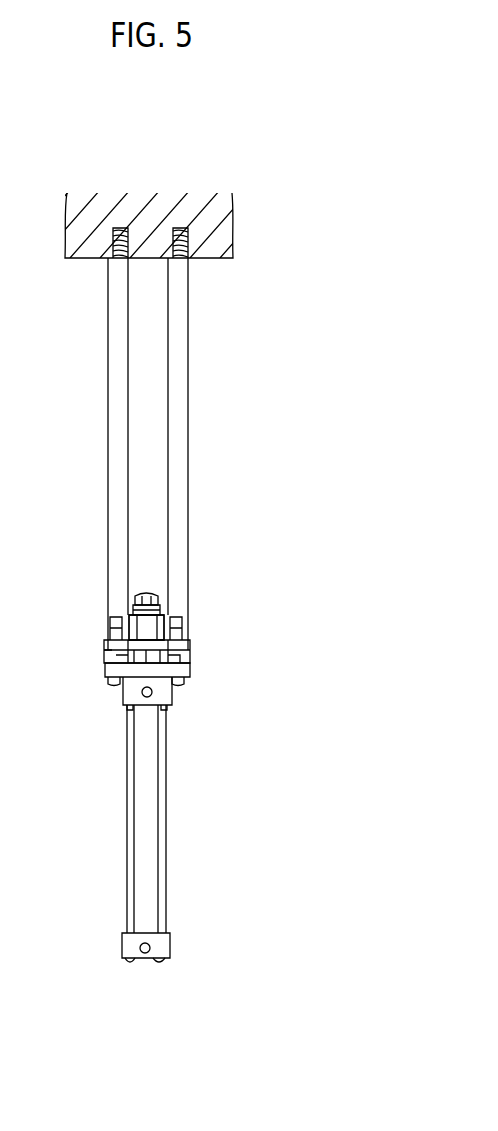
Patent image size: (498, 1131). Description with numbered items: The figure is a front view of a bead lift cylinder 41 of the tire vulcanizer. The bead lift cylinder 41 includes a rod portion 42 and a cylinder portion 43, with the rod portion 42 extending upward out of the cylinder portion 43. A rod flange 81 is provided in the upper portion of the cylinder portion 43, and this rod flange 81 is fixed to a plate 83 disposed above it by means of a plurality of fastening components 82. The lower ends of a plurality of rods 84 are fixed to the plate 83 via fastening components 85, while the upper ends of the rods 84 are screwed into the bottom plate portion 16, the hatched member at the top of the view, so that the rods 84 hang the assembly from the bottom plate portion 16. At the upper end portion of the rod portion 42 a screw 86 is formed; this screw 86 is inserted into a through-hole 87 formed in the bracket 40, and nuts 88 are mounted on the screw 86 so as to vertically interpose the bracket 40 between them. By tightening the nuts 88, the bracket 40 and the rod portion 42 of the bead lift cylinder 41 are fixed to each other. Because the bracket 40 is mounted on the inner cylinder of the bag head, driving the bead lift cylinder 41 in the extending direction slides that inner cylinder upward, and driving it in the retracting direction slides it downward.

The bottom plate portion 16 is at (92, 242).
The rods 84 is at (117, 425).
The rod portion 42 is at (140, 592).
The screw 86 is at (146, 627).
The bracket 40 is at (168, 613).
The nuts 88 is at (135, 612).
The through-hole 87 is at (110, 625).
The fastening components 85 is at (183, 635).
The plate 83 is at (192, 648).
The rod flange 81 is at (190, 670).
The fastening components 82 is at (183, 680).
The bead lift cylinder 41 is at (166, 770).
The cylinder portion 43 is at (145, 822).